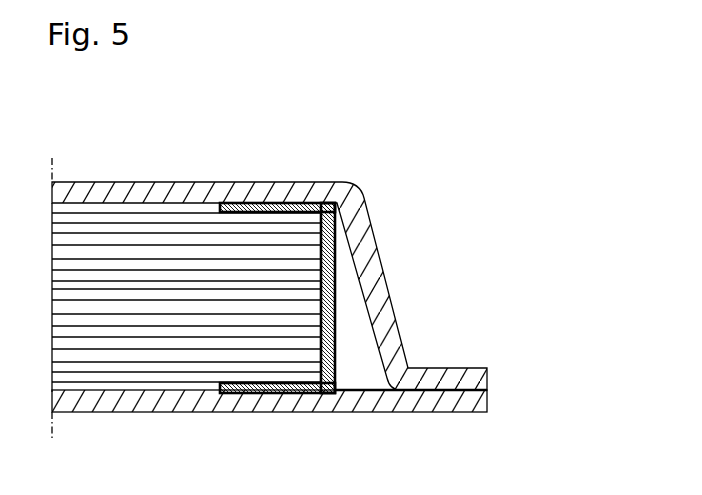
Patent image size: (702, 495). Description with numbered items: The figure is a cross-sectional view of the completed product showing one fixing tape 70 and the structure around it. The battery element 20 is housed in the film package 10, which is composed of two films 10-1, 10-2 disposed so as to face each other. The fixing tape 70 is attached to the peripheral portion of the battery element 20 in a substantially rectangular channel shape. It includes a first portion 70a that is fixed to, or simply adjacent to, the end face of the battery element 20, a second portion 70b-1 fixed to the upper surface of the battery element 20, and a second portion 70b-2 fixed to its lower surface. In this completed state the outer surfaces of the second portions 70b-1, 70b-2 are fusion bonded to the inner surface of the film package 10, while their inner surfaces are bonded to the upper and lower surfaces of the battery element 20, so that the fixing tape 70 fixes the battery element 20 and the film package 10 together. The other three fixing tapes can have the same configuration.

The film package 10 is at (311, 333).
The film 10-1 is at (469, 368).
The film 10-2 is at (455, 412).
The battery element 20 is at (118, 233).
The fixing tape 70 is at (329, 303).
The first portion 70a is at (340, 290).
The second portion 70b-1 is at (268, 205).
The second portion 70b-2 is at (273, 391).